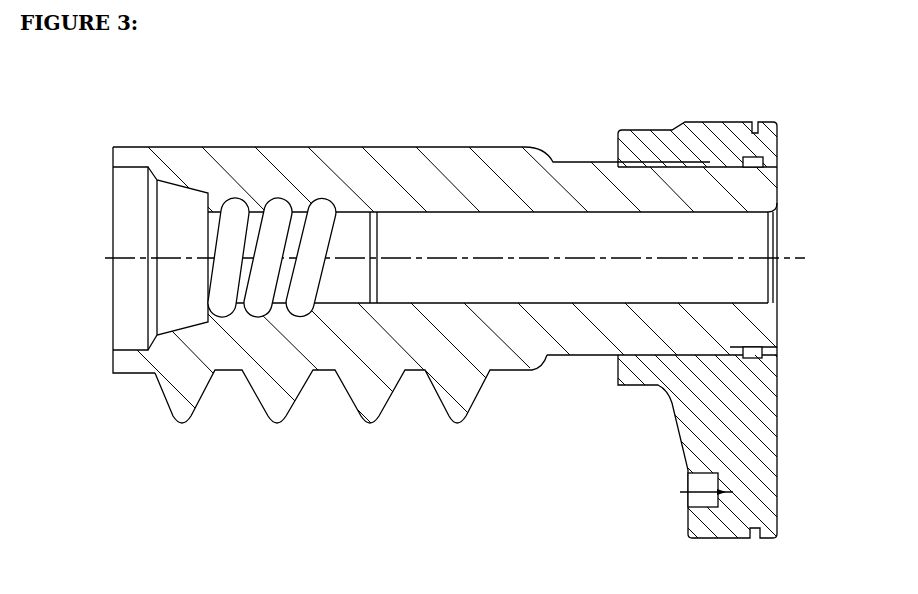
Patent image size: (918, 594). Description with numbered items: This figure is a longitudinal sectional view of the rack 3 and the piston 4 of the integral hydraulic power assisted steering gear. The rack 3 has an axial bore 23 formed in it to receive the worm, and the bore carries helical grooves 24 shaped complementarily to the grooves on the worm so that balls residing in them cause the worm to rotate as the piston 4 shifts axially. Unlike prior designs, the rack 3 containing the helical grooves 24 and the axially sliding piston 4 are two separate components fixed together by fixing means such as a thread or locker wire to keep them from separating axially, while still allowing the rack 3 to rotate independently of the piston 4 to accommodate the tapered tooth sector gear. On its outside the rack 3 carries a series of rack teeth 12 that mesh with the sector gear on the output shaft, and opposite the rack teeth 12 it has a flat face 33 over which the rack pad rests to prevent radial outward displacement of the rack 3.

The rack 3 is at (517, 170).
The piston 4 is at (775, 403).
The rack teeth 12 is at (481, 402).
The axial bore 23 is at (127, 200).
The helical grooves 24 is at (232, 197).
The flat face 33 is at (256, 147).